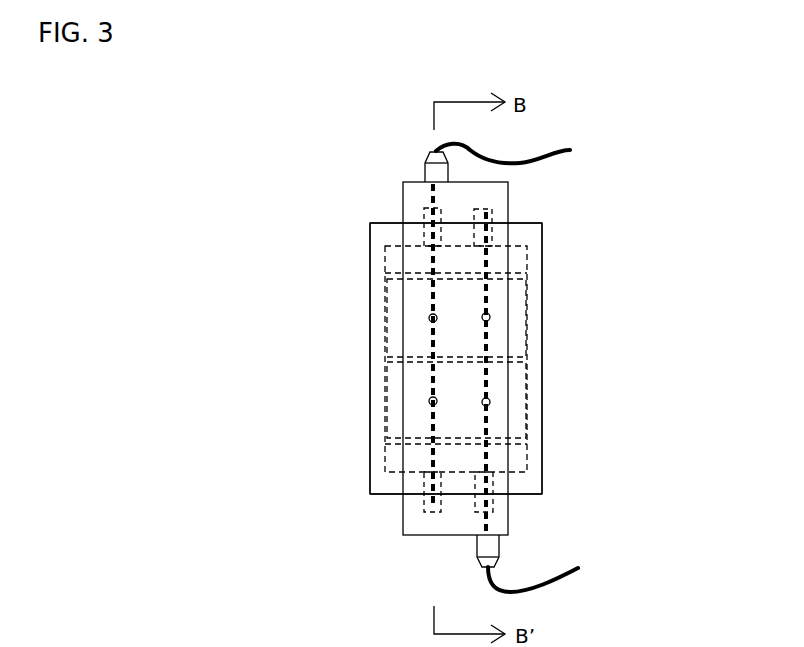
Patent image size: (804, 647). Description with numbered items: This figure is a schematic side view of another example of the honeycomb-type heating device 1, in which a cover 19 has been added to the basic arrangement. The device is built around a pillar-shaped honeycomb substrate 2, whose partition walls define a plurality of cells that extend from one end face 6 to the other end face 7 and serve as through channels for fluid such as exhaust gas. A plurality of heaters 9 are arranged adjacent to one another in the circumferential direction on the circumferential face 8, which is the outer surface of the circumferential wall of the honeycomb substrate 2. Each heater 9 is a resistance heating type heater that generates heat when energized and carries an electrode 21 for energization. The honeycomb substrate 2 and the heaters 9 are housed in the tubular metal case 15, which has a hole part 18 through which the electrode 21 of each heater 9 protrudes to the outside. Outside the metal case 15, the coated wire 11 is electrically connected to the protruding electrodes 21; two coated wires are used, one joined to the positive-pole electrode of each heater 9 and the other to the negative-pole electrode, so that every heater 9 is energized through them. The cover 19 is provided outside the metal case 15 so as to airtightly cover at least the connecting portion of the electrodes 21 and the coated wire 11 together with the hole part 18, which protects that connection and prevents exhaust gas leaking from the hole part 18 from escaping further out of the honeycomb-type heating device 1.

The honeycomb-type heating device 1 is at (671, 83).
The honeycomb substrate 2 is at (383, 264).
The one end face 6 is at (370, 365).
The other end face 7 is at (543, 360).
The circumferential face 8 is at (377, 463).
The heater 9 is at (520, 258).
The coated wire 11 is at (432, 200).
The metal case 15 is at (528, 222).
The hole part 18 is at (432, 217).
The cover 19 is at (402, 234).
The electrode 21 is at (425, 214).